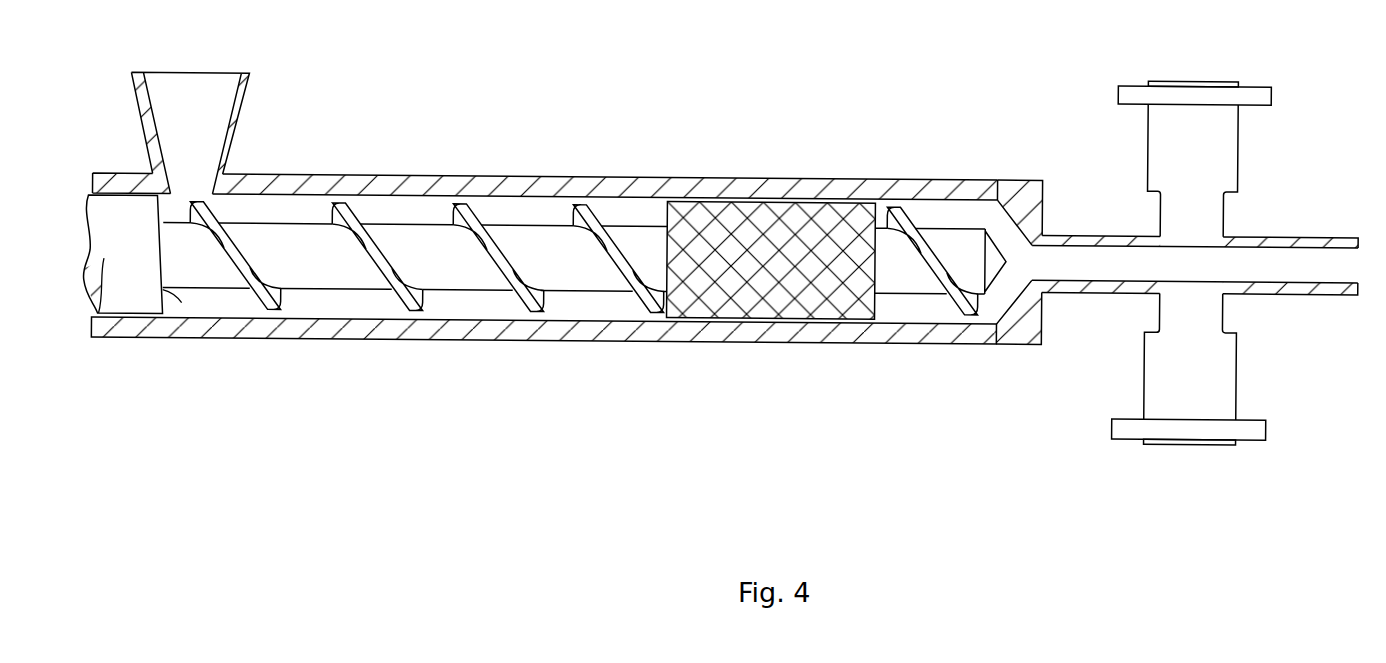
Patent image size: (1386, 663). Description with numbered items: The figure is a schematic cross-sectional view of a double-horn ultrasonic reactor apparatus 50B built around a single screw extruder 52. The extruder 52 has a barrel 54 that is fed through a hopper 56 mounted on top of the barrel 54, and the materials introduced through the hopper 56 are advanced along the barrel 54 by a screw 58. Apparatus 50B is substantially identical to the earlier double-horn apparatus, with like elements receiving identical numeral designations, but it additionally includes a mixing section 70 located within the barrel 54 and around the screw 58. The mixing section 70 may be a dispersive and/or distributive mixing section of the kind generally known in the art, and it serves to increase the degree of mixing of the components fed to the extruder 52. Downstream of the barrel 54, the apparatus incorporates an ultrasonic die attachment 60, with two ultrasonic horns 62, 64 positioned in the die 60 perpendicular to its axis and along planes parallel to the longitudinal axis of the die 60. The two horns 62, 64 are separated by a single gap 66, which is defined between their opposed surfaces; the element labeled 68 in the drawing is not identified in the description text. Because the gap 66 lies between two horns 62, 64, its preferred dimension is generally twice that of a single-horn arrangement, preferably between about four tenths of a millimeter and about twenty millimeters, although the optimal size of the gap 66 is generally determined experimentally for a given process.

The apparatus 50B is at (571, 243).
The single screw extruder 52 is at (479, 305).
The barrel 54 is at (450, 187).
The hopper 56 is at (202, 128).
The screw 58 is at (327, 265).
The ultrasonic die attachment 60 is at (1297, 240).
The ultrasonic horn 62 is at (1197, 327).
The ultrasonic horn 64 is at (1197, 217).
The gap 66 is at (1028, 318).
The outlet bore 68 is at (1197, 260).
The mixing section 70 is at (812, 205).